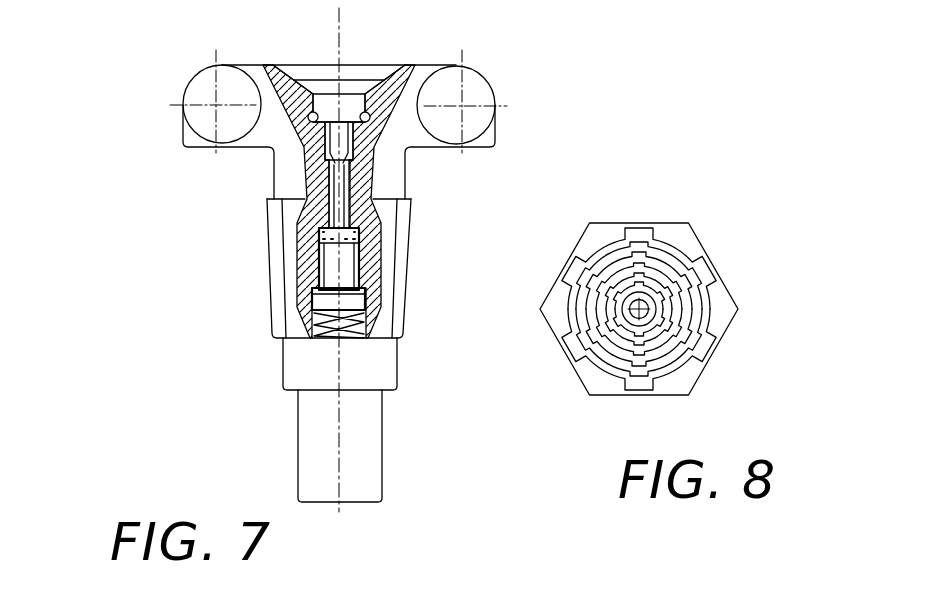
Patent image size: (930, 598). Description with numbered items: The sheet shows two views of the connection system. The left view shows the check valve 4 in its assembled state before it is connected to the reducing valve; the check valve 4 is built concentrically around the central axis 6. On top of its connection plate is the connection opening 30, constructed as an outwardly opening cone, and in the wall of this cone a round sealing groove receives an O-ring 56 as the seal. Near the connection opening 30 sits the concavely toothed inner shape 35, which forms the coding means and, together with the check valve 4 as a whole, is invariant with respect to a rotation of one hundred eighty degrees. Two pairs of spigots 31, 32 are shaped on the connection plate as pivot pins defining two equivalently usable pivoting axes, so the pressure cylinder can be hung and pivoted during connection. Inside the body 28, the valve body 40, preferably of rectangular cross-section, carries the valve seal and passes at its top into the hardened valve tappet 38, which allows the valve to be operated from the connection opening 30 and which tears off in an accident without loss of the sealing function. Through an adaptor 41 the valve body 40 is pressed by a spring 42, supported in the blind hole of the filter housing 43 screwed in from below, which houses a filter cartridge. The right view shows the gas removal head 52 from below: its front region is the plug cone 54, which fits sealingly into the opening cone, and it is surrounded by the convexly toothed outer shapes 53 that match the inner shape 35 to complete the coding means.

In FIG. 7, the check valve 4 is at (236, 290).
In FIG. 7, the central axis 6 is at (342, 457).
In FIG. 7, the valve body 28 is at (385, 177).
In FIG. 7, the connection opening 30 is at (325, 103).
In FIG. 7, the spigot 31 is at (196, 80).
In FIG. 7, the spigot 32 is at (478, 82).
In FIG. 7, the concavely toothed inner shape 35 is at (357, 78).
In FIG. 7, the valve tappet 38 is at (338, 212).
In FIG. 7, the valve body 40 is at (347, 272).
In FIG. 7, the adaptor 41 is at (320, 300).
In FIG. 7, the spring 42 is at (357, 323).
In FIG. 7, the filter housing 43 is at (320, 414).
In FIG. 7, the O-ring 56 is at (308, 122).
In FIG. 8, the gas removal head 52 is at (662, 223).
In FIG. 8, the convexly toothed outer shape 53 is at (695, 275).
In FIG. 8, the plug cone 54 is at (652, 320).